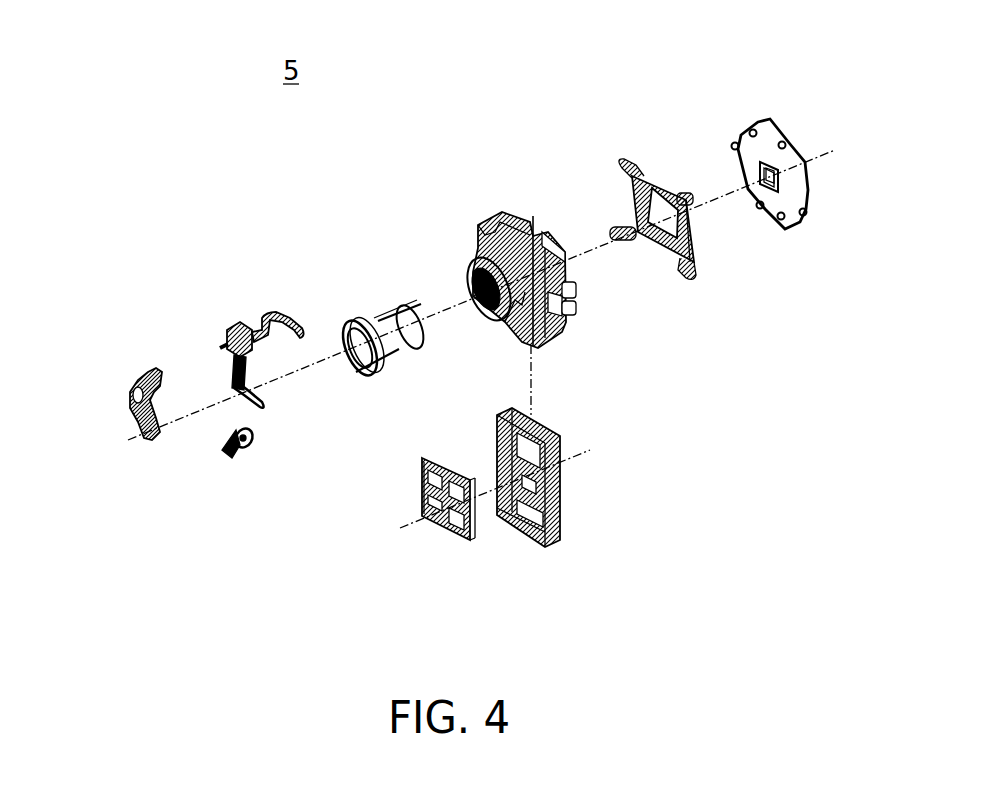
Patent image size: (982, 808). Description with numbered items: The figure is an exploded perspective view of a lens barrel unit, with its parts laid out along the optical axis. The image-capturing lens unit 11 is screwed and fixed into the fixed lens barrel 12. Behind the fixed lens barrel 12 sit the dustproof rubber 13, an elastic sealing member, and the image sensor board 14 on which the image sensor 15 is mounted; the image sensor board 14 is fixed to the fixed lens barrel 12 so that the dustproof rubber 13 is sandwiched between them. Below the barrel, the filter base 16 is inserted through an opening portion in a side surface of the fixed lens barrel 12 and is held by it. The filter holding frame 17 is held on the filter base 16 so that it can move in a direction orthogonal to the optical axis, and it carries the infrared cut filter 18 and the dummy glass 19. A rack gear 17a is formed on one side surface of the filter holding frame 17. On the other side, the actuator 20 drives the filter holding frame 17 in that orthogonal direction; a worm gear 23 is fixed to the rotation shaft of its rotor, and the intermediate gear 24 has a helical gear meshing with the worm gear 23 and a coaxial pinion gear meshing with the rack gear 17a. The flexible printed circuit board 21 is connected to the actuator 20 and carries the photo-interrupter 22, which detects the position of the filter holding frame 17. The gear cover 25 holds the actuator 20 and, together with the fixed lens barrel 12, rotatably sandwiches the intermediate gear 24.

The image-capturing lens unit 11 is at (378, 310).
The fixed lens barrel 12 is at (473, 265).
The dustproof rubber 13 is at (630, 197).
The image sensor board 14 is at (737, 133).
The image sensor 15 is at (770, 165).
The filter base 16 is at (553, 538).
The filter holding frame 17 is at (447, 532).
The rack gear 17a is at (420, 500).
The infrared cut filter 18 is at (420, 482).
The dummy glass 19 is at (437, 520).
The actuator 20 is at (228, 330).
The flexible printed circuit board 21 is at (264, 318).
The photo-interrupter 22 is at (247, 385).
The worm gear 23 is at (250, 370).
The intermediate gear 24 is at (238, 450).
The gear cover 25 is at (133, 438).